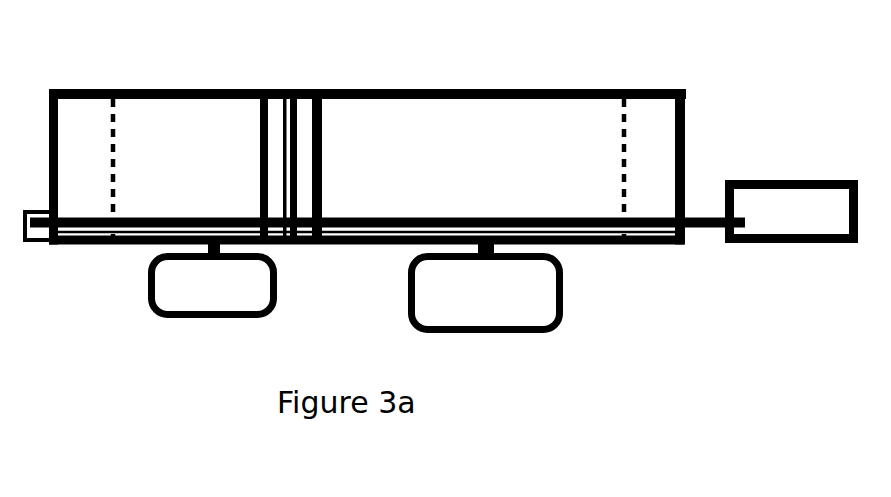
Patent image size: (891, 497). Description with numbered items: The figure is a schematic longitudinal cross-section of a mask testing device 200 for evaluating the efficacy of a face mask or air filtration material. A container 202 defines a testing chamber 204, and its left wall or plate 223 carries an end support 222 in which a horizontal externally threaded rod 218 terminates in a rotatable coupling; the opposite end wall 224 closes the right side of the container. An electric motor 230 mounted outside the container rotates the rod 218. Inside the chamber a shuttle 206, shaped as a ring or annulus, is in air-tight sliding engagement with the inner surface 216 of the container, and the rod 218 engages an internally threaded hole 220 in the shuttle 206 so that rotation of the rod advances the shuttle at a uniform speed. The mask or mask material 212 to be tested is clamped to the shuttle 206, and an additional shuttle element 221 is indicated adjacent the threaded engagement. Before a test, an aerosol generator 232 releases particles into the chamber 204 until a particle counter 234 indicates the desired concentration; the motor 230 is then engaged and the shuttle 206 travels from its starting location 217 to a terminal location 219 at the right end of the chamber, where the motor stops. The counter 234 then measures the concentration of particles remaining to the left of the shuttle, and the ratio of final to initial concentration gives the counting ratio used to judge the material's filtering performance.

The mask testing device 200 is at (680, 310).
The container 202 is at (695, 93).
The testing chamber 204 is at (505, 182).
The shuttle 206 is at (322, 127).
The mask material 212 is at (290, 120).
The inner surface 216 is at (487, 96).
The starting location 217 is at (115, 120).
The threaded rod 218 is at (699, 229).
The terminal location 219 is at (622, 123).
The internally threaded hole 220 is at (302, 242).
The filter element 221 is at (320, 198).
The end support 222 is at (35, 243).
The left wall 223 is at (49, 113).
The right end wall 224 is at (695, 131).
The electric motor 230 is at (783, 180).
The aerosol generator 232 is at (503, 333).
The particle counter 234 is at (207, 320).